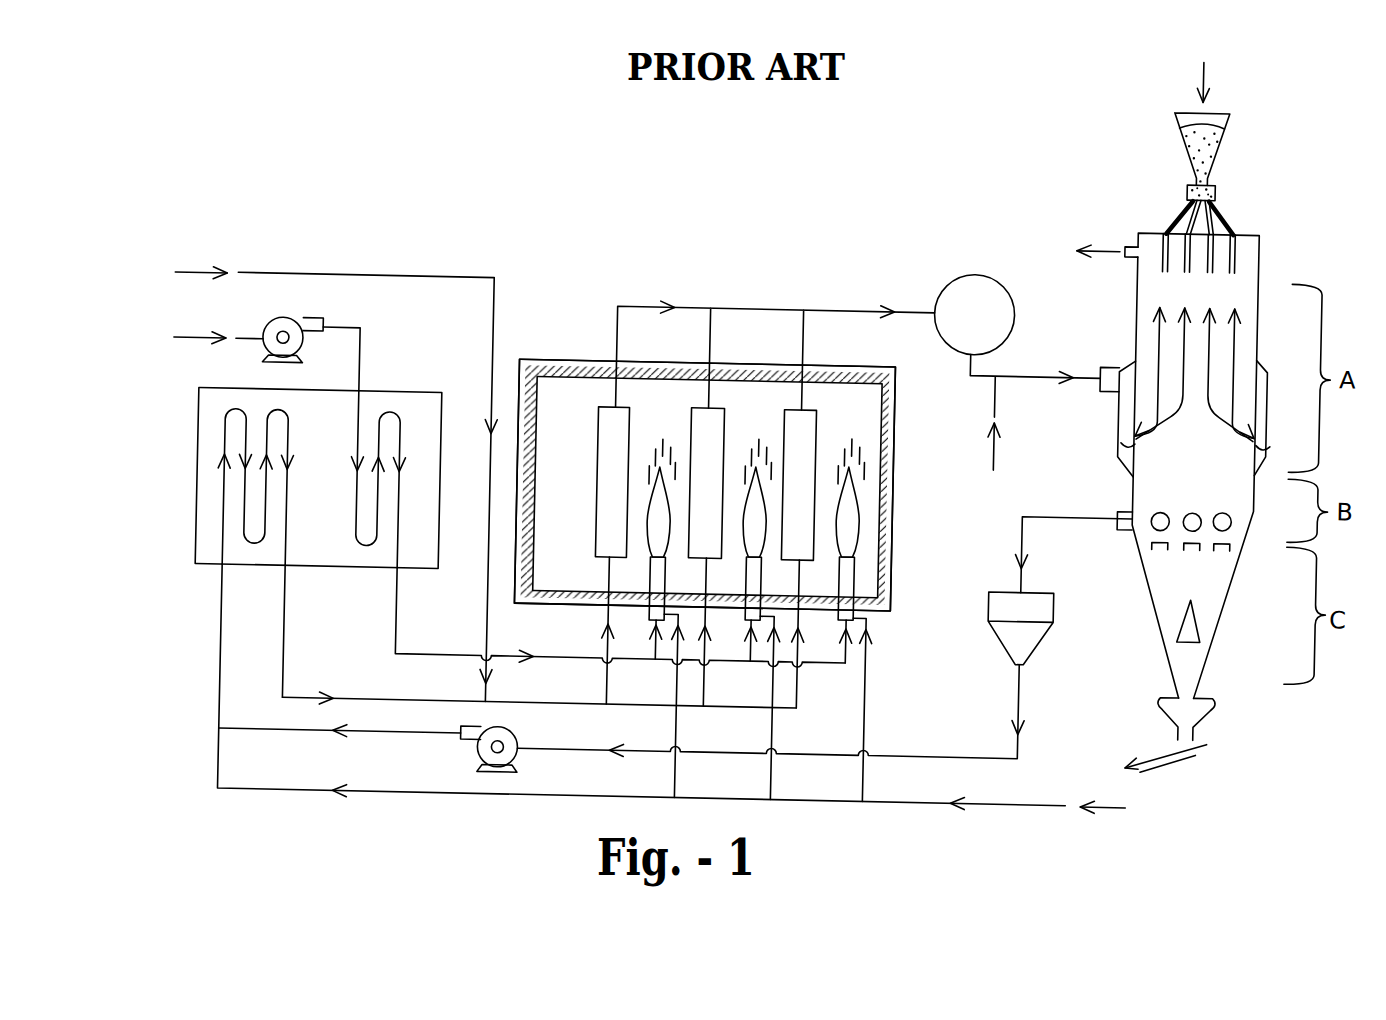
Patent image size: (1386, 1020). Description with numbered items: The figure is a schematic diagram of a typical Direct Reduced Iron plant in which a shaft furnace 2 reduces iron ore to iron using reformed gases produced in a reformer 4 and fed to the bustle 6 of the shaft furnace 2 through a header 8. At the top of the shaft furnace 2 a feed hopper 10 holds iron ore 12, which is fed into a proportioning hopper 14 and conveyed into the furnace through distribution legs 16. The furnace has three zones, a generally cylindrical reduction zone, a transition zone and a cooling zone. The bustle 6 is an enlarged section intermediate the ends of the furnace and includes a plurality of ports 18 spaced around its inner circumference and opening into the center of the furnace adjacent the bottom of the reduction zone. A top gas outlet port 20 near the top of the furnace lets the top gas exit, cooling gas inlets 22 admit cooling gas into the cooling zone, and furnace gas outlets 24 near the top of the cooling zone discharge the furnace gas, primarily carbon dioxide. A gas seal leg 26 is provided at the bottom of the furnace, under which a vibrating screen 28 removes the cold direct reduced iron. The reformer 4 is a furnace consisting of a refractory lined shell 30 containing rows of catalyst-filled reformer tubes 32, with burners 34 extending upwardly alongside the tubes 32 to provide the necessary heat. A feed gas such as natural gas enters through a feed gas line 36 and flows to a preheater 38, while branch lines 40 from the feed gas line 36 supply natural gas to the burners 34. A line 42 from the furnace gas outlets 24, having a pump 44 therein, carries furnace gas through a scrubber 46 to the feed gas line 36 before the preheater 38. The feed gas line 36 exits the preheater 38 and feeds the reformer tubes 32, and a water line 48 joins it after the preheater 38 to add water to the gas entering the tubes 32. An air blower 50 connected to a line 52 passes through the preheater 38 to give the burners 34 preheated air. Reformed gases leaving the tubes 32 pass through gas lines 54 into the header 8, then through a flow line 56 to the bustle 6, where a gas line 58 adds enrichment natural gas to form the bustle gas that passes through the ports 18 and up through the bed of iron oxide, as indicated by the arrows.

The shaft furnace 2 is at (1254, 261).
The reformer 4 is at (893, 561).
The bustle 6 is at (1127, 386).
The header 8 is at (963, 270).
The feed hopper 10 is at (1216, 111).
The iron ore 12 is at (1175, 130).
The proportioning hopper 14 is at (1208, 176).
The distribution legs 16 is at (1163, 212).
The ports 18 is at (1118, 439).
The top gas outlet port 20 is at (1121, 240).
The cooling gas inlets 22 is at (1182, 613).
The furnace gas outlets 24 is at (1123, 521).
The gas seal leg 26 is at (1197, 702).
The vibrating screen 28 is at (1198, 747).
The refractory lined shell 30 is at (893, 490).
The reformer tubes 32 is at (795, 423).
The burners 34 is at (658, 588).
The feed gas line 36 is at (286, 622).
The preheater 38 is at (387, 397).
The branch lines 40 is at (680, 731).
The line 42 is at (307, 738).
The pump 44 is at (485, 757).
The scrubber 46 is at (1022, 625).
The water line 48 is at (317, 280).
The air blower 50 is at (278, 328).
The line 52 is at (356, 347).
The gas lines 54 is at (613, 329).
The flow line 56 is at (985, 369).
The gas line 58 is at (990, 392).